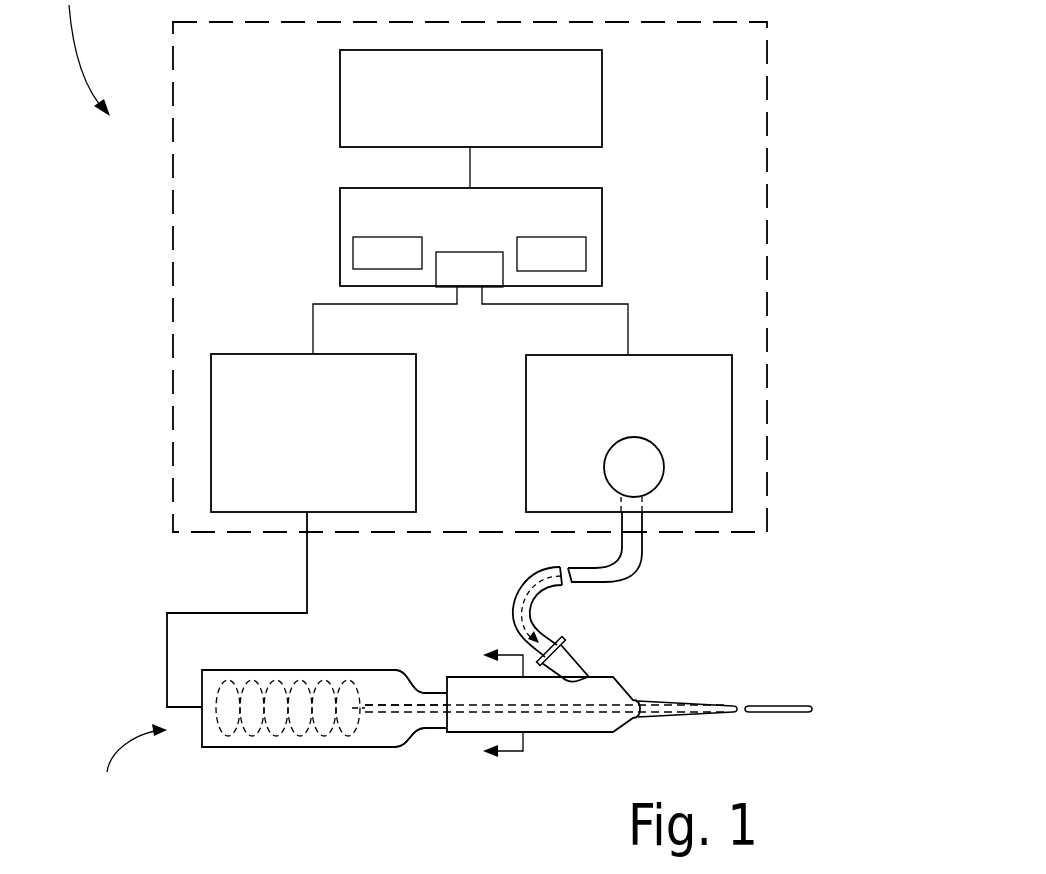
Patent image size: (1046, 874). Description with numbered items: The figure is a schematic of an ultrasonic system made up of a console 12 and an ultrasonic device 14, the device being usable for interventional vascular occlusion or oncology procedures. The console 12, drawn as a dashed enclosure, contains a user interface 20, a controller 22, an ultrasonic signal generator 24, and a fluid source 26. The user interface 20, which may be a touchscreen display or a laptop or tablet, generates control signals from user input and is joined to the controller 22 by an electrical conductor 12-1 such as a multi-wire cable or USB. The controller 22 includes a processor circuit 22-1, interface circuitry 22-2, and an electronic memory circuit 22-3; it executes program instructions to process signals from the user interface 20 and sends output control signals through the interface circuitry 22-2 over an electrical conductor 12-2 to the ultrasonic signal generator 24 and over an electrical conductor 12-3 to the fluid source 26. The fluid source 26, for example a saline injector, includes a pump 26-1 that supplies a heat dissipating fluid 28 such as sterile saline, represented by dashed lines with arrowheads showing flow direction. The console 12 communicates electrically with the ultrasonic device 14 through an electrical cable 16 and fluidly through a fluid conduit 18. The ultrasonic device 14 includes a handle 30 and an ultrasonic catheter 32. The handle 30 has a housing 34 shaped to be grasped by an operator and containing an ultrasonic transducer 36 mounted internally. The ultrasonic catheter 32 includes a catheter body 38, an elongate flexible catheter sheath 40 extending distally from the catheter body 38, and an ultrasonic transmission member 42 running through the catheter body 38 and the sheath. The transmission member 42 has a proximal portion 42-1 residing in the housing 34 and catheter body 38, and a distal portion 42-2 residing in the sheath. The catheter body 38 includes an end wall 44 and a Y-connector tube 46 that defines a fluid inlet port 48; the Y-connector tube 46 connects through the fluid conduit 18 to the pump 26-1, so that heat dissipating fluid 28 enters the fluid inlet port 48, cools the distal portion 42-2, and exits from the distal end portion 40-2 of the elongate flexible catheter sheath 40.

The console 12 is at (768, 197).
The electrical conductor 12-1 is at (475, 158).
The electrical conductor 12-2 is at (313, 333).
The electrical conductor 12-3 is at (628, 332).
The ultrasonic device 14 is at (479, 701).
The electrical cable 16 is at (232, 613).
The fluid conduit 18 is at (620, 582).
The user interface 20 is at (563, 127).
The controller 22 is at (578, 234).
The processor circuit 22-1 is at (387, 253).
The interface circuitry 22-2 is at (469, 269).
The electronic memory circuit 22-3 is at (551, 254).
The ultrasonic signal generator 24 is at (326, 497).
The fluid source 26 is at (698, 431).
The pump 26-1 is at (634, 467).
The heat dissipating fluid 28 is at (520, 601).
The handle 30 is at (400, 764).
The ultrasonic catheter 32 is at (462, 637).
The housing 34 is at (307, 670).
The ultrasonic transducer 36 is at (253, 732).
The catheter body 38 is at (592, 732).
The elongate flexible catheter sheath 40 is at (750, 704).
The distal end portion 40-2 is at (808, 713).
The ultrasonic transmission member 42 is at (390, 692).
The proximal portion 42-1 is at (388, 710).
The distal portion 42-2 is at (650, 708).
The end wall 44 is at (437, 693).
The Y-connector tube 46 is at (570, 656).
The fluid inlet port 48 is at (557, 628).